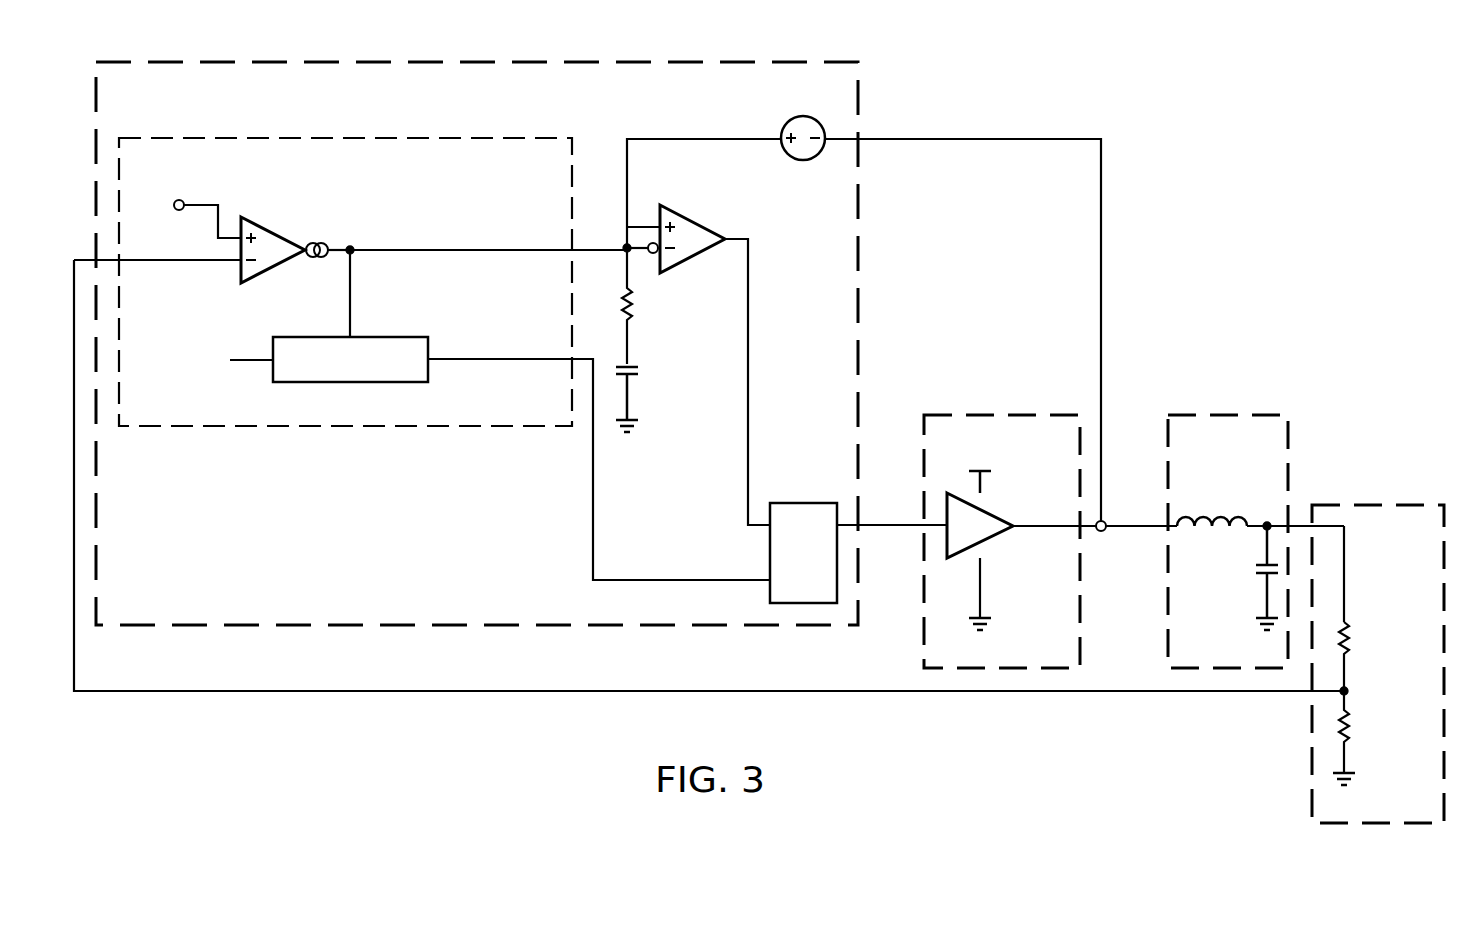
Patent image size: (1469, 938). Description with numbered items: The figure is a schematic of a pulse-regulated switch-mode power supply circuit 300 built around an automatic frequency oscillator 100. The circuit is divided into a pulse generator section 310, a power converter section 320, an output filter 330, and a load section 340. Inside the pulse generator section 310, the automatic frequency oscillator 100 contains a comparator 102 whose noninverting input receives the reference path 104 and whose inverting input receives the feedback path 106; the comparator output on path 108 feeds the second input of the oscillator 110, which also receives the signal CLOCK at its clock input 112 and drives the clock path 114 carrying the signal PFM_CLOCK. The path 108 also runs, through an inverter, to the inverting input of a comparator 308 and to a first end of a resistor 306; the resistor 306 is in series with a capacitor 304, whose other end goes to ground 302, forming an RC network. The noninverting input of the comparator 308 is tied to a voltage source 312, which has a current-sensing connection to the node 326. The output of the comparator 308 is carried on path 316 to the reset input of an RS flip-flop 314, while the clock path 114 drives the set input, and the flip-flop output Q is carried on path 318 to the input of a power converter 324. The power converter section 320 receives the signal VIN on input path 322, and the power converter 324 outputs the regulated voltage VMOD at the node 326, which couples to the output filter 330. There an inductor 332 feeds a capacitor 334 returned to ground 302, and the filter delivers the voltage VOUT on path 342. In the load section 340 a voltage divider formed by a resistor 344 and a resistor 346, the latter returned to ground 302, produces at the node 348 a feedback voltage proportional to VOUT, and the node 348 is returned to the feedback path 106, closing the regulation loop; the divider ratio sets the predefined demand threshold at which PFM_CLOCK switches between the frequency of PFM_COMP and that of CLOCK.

The pulse-regulated switch-mode power supply circuit 300 is at (1278, 151).
The pulse generator section 310 is at (428, 62).
The automatic frequency oscillator 100 is at (284, 138).
The comparator 102 is at (283, 232).
The reference path 104 is at (203, 203).
The feedback path 106 is at (181, 265).
The path 108 is at (460, 258).
The oscillator 110 is at (316, 336).
The clock input CLOCK 112 is at (250, 368).
The clock path 114 is at (498, 367).
The ground 302 is at (640, 425).
The capacitor 304 is at (640, 370).
The resistor 306 is at (636, 306).
The comparator 308 is at (690, 214).
The voltage source 312 is at (803, 160).
The RS flip-flop 314 is at (802, 502).
The path 316 is at (752, 380).
The path 318 is at (900, 532).
The power converter section 320 is at (1003, 413).
The input path 322 is at (983, 490).
The power converter 324 is at (1000, 535).
The node 326 is at (1106, 532).
The output filter 330 is at (1226, 413).
The inductor 332 is at (1222, 506).
The capacitor 334 is at (1254, 568).
The load section 340 is at (1377, 826).
The path 342 is at (1347, 592).
The resistor 344 is at (1352, 638).
The resistor 346 is at (1352, 727).
The node 348 is at (1350, 694).